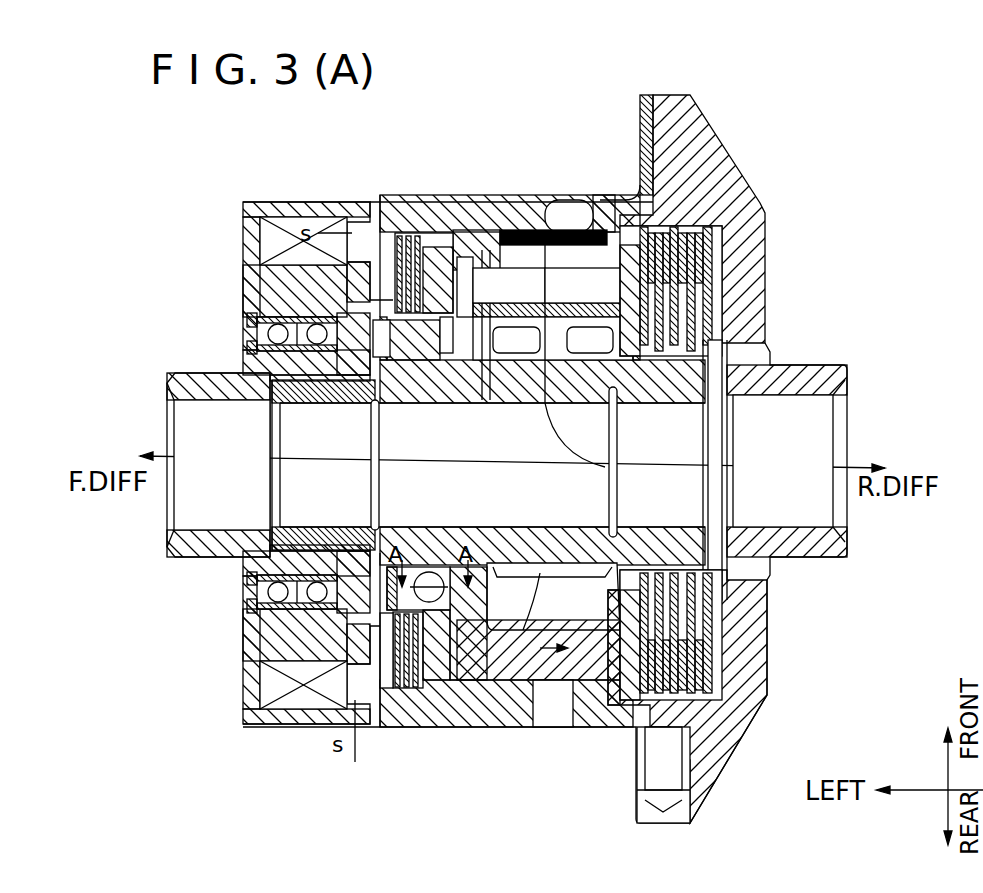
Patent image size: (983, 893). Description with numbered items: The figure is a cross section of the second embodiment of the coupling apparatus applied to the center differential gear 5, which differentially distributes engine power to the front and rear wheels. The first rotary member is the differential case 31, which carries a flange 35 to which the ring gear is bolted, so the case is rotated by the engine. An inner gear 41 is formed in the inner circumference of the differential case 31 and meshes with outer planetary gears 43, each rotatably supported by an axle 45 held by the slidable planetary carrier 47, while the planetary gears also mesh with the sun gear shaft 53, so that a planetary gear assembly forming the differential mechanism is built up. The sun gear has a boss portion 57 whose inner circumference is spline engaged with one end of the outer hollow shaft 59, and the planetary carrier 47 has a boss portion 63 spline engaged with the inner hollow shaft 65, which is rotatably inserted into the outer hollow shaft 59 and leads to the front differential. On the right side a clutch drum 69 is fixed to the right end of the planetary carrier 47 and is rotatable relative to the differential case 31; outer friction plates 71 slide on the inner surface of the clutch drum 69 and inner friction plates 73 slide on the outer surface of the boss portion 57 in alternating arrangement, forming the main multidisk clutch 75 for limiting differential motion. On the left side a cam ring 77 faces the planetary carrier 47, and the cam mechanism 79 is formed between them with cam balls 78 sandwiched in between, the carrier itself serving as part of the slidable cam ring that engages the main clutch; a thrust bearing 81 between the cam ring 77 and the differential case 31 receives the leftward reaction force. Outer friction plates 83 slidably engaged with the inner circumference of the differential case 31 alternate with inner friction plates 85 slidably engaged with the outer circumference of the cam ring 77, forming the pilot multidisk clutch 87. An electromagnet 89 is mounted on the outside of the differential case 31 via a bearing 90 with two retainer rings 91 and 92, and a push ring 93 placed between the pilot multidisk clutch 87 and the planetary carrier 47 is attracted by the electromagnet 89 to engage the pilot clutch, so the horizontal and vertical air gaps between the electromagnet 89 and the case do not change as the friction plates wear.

The center differential gear 5 is at (781, 210).
The differential case 31 is at (594, 180).
The flange 35 is at (645, 115).
The inner gear 41 is at (560, 232).
The outer planetary gears 43 is at (589, 285).
The axle 45 is at (522, 303).
The slidable planetary carrier 47 is at (470, 660).
The sun gear shaft 53 is at (480, 640).
The boss portion 57 is at (648, 392).
The outer hollow shaft 59 is at (746, 554).
The boss portion 63 is at (333, 398).
The inner hollow shaft 65 is at (258, 556).
The clutch drum 69 is at (746, 727).
The outer friction plates 71 is at (720, 662).
The inner friction plates 73 is at (715, 621).
The main multidisk clutch 75 is at (780, 287).
The cam ring 77 is at (403, 612).
The cam balls 78 is at (445, 610).
The cam mechanism 79 is at (430, 566).
The thrust bearing 81 is at (355, 542).
The outer friction plates 83 is at (398, 232).
The inner friction plates 85 is at (437, 245).
The pilot multidisk clutch 87 is at (450, 208).
The electromagnet 89 is at (275, 245).
The bearing 90 is at (258, 333).
The retainer ring 91 is at (252, 320).
The retainer ring 92 is at (250, 346).
The push ring 93 is at (445, 670).